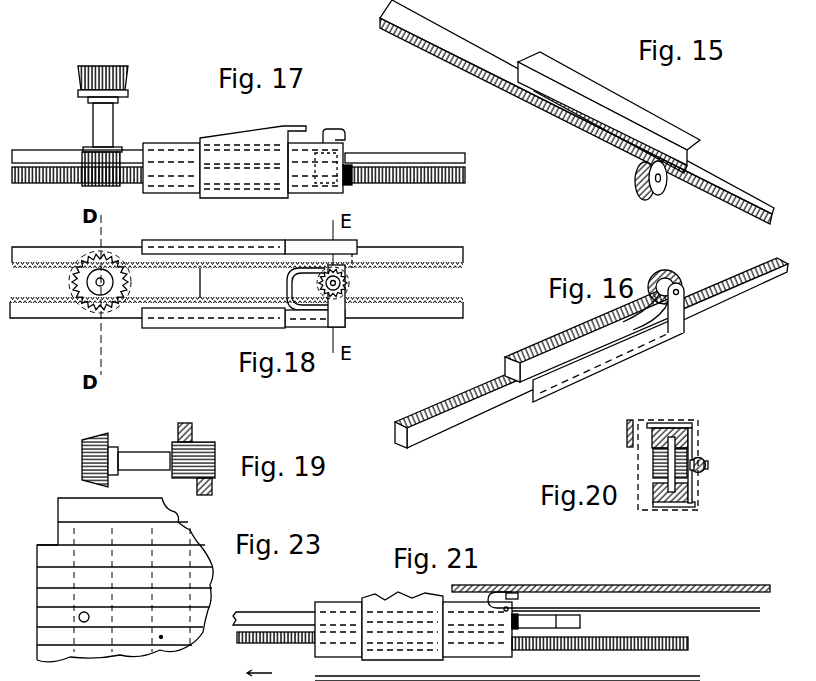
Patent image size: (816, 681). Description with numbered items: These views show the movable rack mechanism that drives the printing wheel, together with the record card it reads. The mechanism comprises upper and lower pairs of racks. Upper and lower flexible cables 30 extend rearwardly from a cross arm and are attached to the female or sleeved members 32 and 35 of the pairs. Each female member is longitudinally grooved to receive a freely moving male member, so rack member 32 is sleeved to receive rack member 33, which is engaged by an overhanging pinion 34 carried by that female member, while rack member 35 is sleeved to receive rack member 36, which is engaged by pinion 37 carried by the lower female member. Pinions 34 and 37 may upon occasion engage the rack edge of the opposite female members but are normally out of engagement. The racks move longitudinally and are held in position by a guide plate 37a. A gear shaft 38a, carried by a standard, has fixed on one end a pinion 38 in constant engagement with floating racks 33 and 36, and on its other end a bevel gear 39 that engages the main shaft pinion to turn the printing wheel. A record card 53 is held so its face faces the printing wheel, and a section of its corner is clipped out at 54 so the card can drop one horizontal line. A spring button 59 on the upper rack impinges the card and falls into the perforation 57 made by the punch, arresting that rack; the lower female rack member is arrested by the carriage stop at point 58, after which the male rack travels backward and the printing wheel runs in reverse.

In FIG. 21, the flexible cable 30 is at (705, 612).
In FIG. 17, the female rack member of the upper pair 32 is at (177, 146).
In FIG. 18, the female rack member of the upper pair 32 is at (182, 252).
In FIG. 21, the female rack member of the upper pair 32 is at (352, 597).
In FIG. 15, the female rack member of the upper pair 32 is at (560, 88).
In FIG. 20, the female rack member of the upper pair 32 is at (693, 432).
In FIG. 17, the male rack member of the upper pair 33 is at (46, 152).
In FIG. 18, the male rack member of the upper pair 33 is at (70, 242).
In FIG. 19, the male rack member of the upper pair 33 is at (200, 413).
In FIG. 21, the male rack member of the upper pair 33 is at (298, 601).
In FIG. 15, the male rack member of the upper pair 33 is at (463, 50).
In FIG. 20, the male rack member of the upper pair 33 is at (665, 432).
In FIG. 17, the pinion 34 is at (354, 157).
In FIG. 21, the pinion 34 is at (550, 608).
In FIG. 15, the pinion 34 is at (652, 196).
In FIG. 20, the pinion 34 is at (658, 466).
In FIG. 18, the female rack member of the lower pair 35 is at (180, 329).
In FIG. 16, the female rack member of the lower pair 35 is at (565, 338).
In FIG. 20, the female rack member of the lower pair 35 is at (665, 506).
In FIG. 17, the male rack member of the lower pair 36 is at (47, 183).
In FIG. 18, the male rack member of the lower pair 36 is at (71, 322).
In FIG. 19, the male rack member of the lower pair 36 is at (209, 495).
In FIG. 21, the male rack member of the lower pair 36 is at (301, 645).
In FIG. 16, the male rack member of the lower pair 36 is at (492, 382).
In FIG. 20, the male rack member of the lower pair 36 is at (692, 492).
In FIG. 17, the pinion 37 is at (358, 183).
In FIG. 18, the pinion 37 is at (350, 283).
In FIG. 21, the pinion 37 is at (530, 644).
In FIG. 16, the pinion 37 is at (672, 272).
In FIG. 20, the pinion 37 is at (706, 466).
In FIG. 17, the guide plate 37a is at (255, 124).
In FIG. 18, the guide plate 37a is at (278, 283).
In FIG. 21, the guide plate 37a is at (400, 589).
In FIG. 16, the guide plate 37a is at (608, 343).
In FIG. 20, the guide plate 37a is at (636, 514).
In FIG. 17, the pinion 38 is at (83, 149).
In FIG. 18, the pinion 38 is at (128, 283).
In FIG. 19, the pinion 38 is at (210, 441).
In FIG. 17, the gear shaft 38a is at (113, 126).
In FIG. 19, the gear shaft 38a is at (136, 460).
In FIG. 17, the bevel gear 39 is at (130, 80).
In FIG. 18, the bevel gear 39 is at (72, 284).
In FIG. 19, the bevel gear 39 is at (82, 440).
In FIG. 23, the record card 53 is at (57, 506).
In FIG. 21, the record card 53 is at (616, 585).
In FIG. 23, the clipped corner section of the card 54 is at (48, 540).
In FIG. 23, the perforation in the card 57 is at (79, 617).
In FIG. 21, the perforation in the card 57 is at (506, 590).
In FIG. 23, the point on the card 58 is at (165, 639).
In FIG. 17, the spring button 59 is at (340, 132).
In FIG. 21, the spring button 59 is at (520, 593).
In FIG. 20, the spring button 59 is at (708, 470).